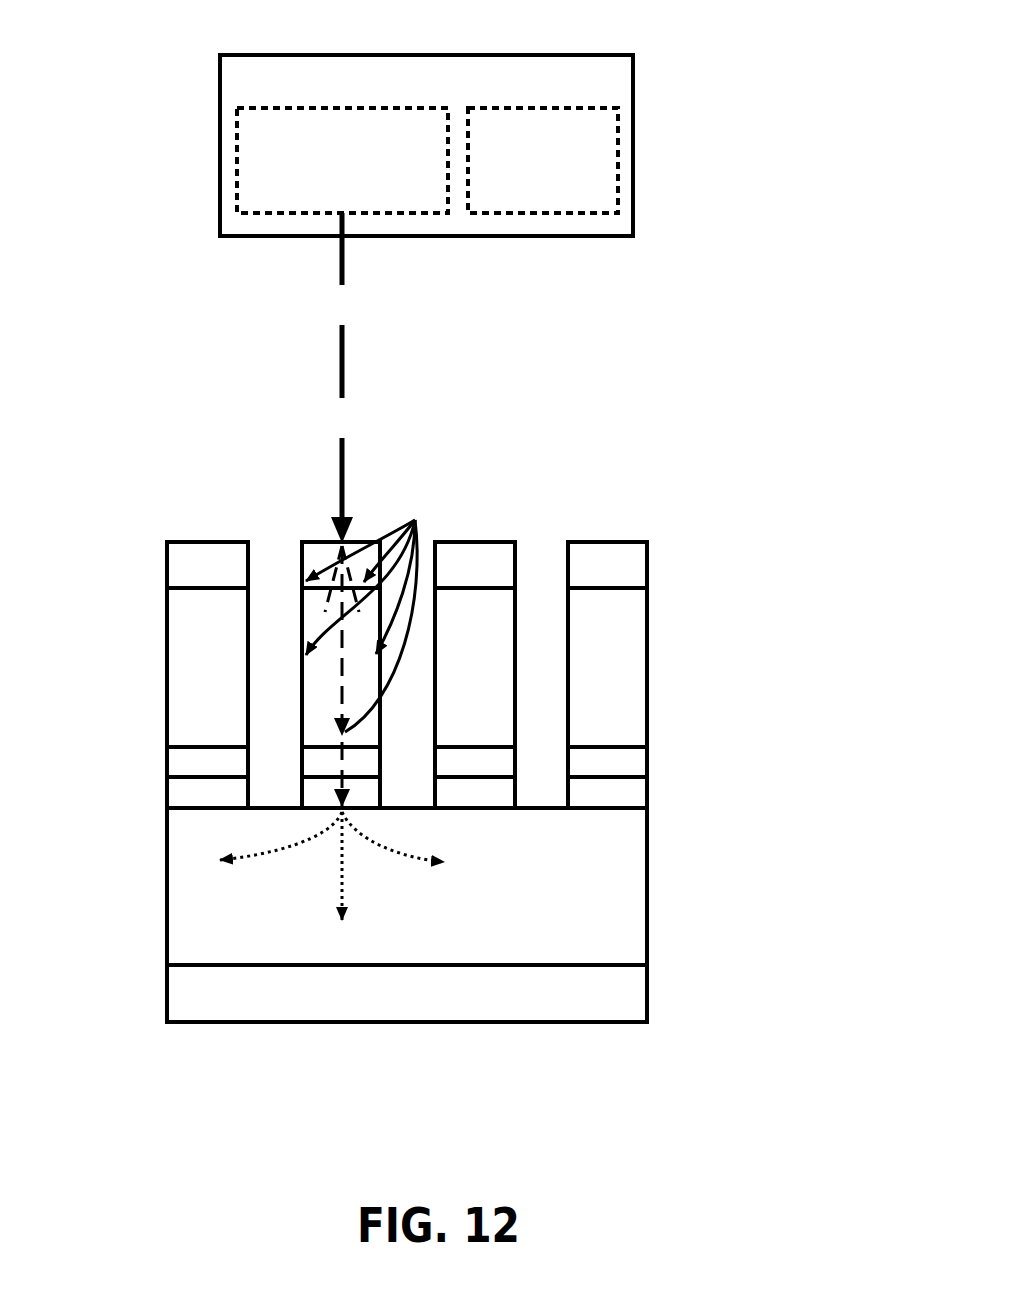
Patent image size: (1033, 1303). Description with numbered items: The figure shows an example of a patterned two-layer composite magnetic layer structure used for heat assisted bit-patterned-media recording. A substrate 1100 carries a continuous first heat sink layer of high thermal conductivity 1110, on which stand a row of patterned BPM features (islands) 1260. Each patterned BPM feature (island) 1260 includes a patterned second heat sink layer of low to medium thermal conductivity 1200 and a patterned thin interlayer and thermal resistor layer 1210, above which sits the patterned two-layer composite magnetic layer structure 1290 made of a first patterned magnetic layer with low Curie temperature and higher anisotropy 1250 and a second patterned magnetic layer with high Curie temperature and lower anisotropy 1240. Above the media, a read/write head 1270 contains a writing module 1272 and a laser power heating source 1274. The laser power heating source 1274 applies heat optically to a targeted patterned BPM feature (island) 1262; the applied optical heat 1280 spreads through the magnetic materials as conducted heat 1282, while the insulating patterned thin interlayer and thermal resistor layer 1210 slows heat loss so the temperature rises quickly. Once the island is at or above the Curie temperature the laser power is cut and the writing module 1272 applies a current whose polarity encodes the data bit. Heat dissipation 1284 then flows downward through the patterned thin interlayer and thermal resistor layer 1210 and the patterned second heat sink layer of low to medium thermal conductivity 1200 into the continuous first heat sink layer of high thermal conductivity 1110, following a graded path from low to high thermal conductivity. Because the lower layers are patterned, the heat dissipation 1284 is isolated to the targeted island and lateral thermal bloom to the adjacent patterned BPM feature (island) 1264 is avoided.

The substrate 1100 is at (627, 1003).
The continuous first heat sink layer of high thermal conductivity 1110 is at (627, 917).
The patterned second heat sink layer of low to medium thermal conductivity 1200 is at (188, 797).
The patterned thin interlayer and thermal resistor layer 1210 is at (188, 770).
The patterned magnetic layer No. 2 1240 is at (182, 572).
The patterned magnetic layer No. 1 1250 is at (180, 683).
The patterned BPM feature (island) 1260 is at (192, 542).
The targeted patterned BPM feature (island) 1262 is at (362, 542).
The adjacent patterned BPM feature (island) 1264 is at (233, 542).
The read/write head 1270 is at (615, 80).
The writing module 1272 is at (602, 197).
The laser power heating source 1274 is at (255, 187).
The applied optical heat 1280 is at (342, 398).
The conducted heat 1282 is at (373, 615).
The heat dissipation 1284 is at (335, 887).
The patterned 2-layer composite magnetic layer structure 1290 is at (649, 738).